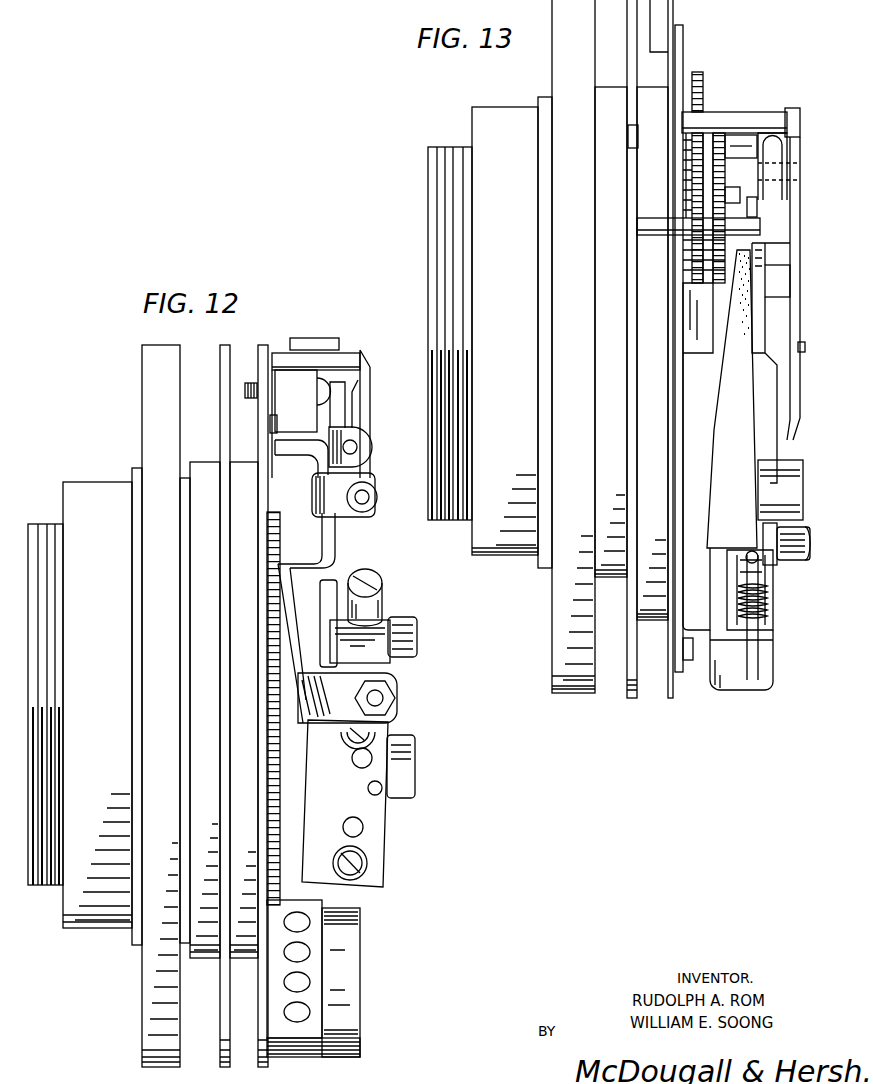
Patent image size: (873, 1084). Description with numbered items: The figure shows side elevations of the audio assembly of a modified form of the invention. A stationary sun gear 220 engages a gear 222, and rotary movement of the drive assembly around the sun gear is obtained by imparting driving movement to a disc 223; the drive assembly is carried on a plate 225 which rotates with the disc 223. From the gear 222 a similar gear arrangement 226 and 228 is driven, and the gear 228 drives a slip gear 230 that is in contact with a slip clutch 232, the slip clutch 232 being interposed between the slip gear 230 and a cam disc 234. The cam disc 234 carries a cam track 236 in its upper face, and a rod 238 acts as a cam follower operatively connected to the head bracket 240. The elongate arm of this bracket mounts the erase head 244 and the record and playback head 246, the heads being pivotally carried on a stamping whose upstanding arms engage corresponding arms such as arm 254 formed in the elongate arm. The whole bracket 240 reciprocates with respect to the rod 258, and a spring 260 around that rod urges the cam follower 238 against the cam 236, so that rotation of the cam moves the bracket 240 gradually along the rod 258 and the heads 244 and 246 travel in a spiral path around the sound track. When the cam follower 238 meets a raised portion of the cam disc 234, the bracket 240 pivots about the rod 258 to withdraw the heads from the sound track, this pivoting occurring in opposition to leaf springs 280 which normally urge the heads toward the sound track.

In FIG. 12, the stationary sun gear 220 is at (281, 790).
In FIG. 13, the stationary sun gear 220 is at (685, 256).
In FIG. 13, the gear 222 is at (700, 72).
In FIG. 12, the disc 223 is at (143, 345).
In FIG. 13, the disc 223 is at (556, 695).
In FIG. 12, the plate 225 is at (265, 345).
In FIG. 13, the plate 225 is at (669, 699).
In FIG. 13, the gear 226 is at (733, 130).
In FIG. 13, the gear 228 is at (733, 195).
In FIG. 13, the slip gear 230 is at (738, 288).
In FIG. 13, the slip clutch 232 is at (741, 293).
In FIG. 13, the cam disc 234 is at (761, 236).
In FIG. 13, the cam track 236 is at (777, 275).
In FIG. 12, the rod 238 is at (357, 447).
In FIG. 13, the rod 238 is at (750, 552).
In FIG. 12, the head bracket 240 is at (336, 545).
In FIG. 12, the erase head 244 is at (418, 633).
In FIG. 12, the record and playback head 246 is at (412, 775).
In FIG. 12, the arm 254 is at (330, 718).
In FIG. 12, the rod 258 is at (370, 500).
In FIG. 13, the rod 258 is at (760, 660).
In FIG. 13, the spring 260 is at (768, 612).
In FIG. 12, the leaf springs 280 is at (270, 560).